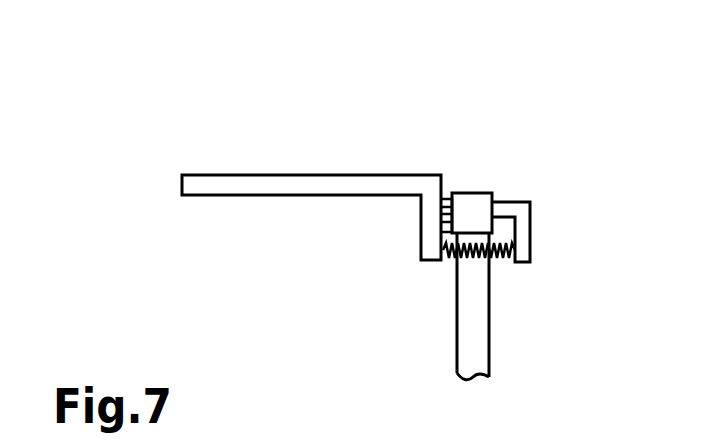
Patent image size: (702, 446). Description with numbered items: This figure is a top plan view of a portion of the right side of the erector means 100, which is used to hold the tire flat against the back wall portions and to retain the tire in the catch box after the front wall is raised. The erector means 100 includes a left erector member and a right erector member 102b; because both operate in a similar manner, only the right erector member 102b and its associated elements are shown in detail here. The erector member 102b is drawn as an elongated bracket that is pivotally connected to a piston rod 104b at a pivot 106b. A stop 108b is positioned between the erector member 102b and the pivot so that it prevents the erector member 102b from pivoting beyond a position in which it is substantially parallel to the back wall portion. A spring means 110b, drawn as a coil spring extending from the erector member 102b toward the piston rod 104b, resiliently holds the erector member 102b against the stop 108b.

The erector means 100 is at (417, 115).
The right erector member 102b is at (255, 174).
The piston rod 104b is at (490, 333).
The pivot 106b is at (448, 193).
The stop 108b is at (446, 233).
The spring means 110b is at (462, 246).